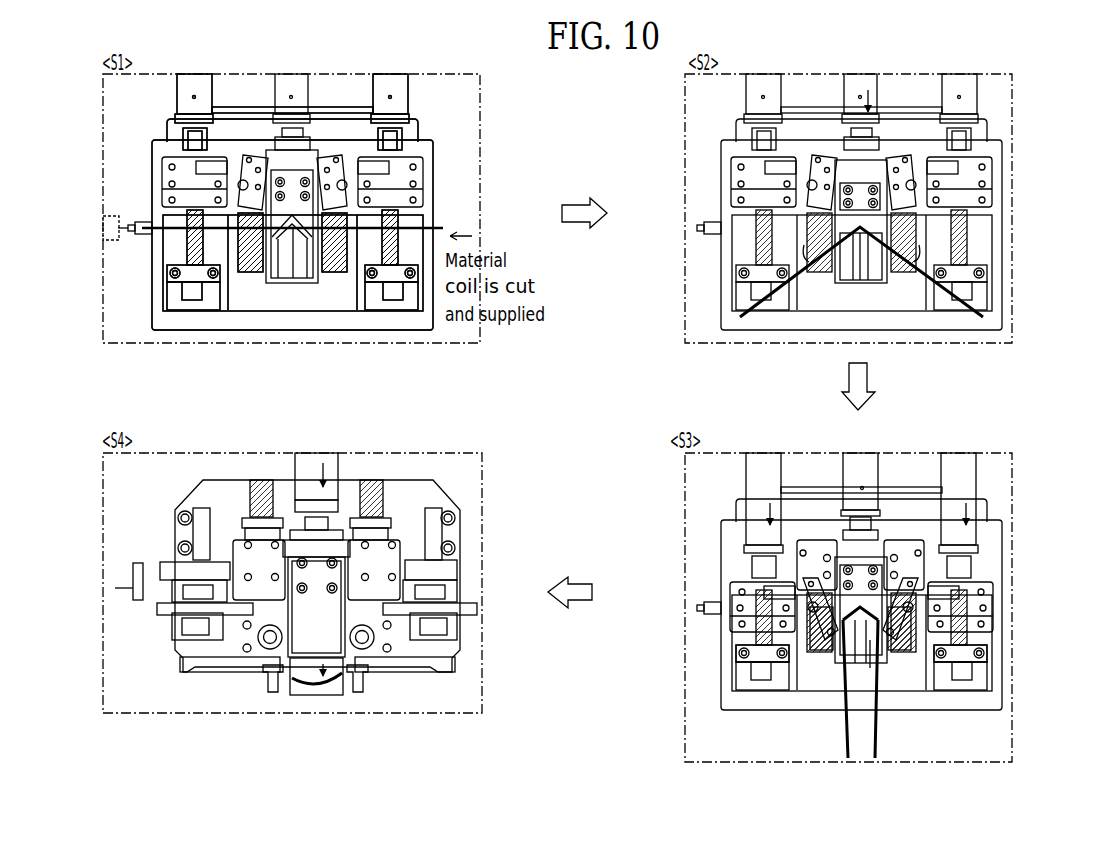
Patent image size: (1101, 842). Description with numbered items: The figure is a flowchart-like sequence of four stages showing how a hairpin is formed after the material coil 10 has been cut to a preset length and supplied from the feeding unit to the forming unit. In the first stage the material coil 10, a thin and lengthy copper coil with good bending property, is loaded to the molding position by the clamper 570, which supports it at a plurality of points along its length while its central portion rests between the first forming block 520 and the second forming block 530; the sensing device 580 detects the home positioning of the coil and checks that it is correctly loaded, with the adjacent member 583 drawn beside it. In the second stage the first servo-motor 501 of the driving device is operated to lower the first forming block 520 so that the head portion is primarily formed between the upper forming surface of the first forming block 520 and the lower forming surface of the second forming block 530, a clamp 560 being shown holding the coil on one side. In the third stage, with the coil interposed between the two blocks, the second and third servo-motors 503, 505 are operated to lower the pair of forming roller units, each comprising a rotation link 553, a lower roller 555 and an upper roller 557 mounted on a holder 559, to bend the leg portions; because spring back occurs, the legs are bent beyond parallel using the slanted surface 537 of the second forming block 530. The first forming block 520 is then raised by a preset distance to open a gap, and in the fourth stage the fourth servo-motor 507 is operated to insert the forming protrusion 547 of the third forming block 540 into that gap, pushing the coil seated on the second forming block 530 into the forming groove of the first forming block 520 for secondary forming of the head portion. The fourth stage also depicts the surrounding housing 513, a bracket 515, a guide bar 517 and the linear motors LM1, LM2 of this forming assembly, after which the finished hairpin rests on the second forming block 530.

The material coil 10 is at (441, 228).
The first servo-motor 501 is at (293, 78).
The second servo-motor 503 is at (762, 462).
The third servo-motor 505 is at (960, 462).
The fourth servo-motor 507 is at (306, 462).
The housing 513 is at (410, 492).
The bracket 515 is at (457, 567).
The guide bar 517 is at (475, 609).
The first forming block 520 is at (292, 173).
The second forming block 530 is at (285, 272).
The slanted surface 537 is at (872, 650).
The third forming block 540 is at (292, 645).
The forming protrusion 547 is at (307, 675).
The rotation link 553 is at (800, 622).
The lower roller 555 is at (822, 665).
The upper roller 557 is at (812, 570).
The lever holder 559 is at (805, 557).
The clamp 560 is at (970, 172).
The clamper 570 is at (162, 215).
The sensing device 580 is at (103, 231).
The feed rod 583 is at (130, 226).
The first linear motor LM1 is at (457, 593).
The second linear motor LM2 is at (445, 633).